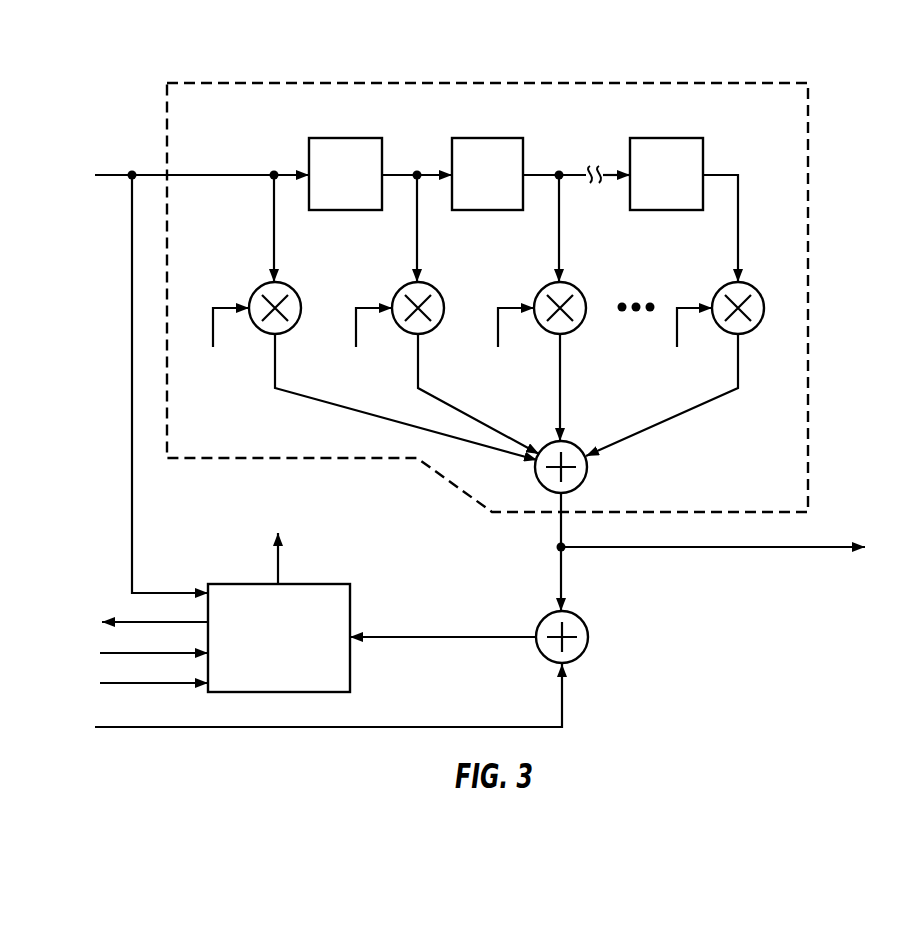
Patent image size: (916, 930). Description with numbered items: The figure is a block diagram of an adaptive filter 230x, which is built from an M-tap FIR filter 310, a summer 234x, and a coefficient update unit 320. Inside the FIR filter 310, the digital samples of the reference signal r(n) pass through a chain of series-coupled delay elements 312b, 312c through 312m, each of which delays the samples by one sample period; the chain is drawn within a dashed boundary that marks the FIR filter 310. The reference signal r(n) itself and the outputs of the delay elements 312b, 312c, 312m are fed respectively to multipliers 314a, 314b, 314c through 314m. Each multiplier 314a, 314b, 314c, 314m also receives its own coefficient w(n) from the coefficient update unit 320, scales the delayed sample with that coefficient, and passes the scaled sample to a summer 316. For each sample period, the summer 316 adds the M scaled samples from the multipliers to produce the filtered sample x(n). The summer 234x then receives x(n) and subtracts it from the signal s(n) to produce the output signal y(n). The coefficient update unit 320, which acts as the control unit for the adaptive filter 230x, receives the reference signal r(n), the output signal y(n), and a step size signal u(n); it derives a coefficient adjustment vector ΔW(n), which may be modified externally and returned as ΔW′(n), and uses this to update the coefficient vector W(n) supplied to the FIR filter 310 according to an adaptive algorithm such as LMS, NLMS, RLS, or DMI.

The adaptive filter 230x is at (90, 46).
The M-tap FIR filter 310 is at (476, 84).
The delay element 312b is at (343, 138).
The delay element 312c is at (498, 123).
The delay element 312m is at (675, 123).
The multiplier 314a is at (294, 297).
The multiplier 314b is at (437, 297).
The multiplier 314c is at (579, 297).
The multiplier 314m is at (767, 286).
The summer 316 is at (587, 470).
The summer 234x is at (588, 637).
The coefficient update unit 320 is at (298, 584).